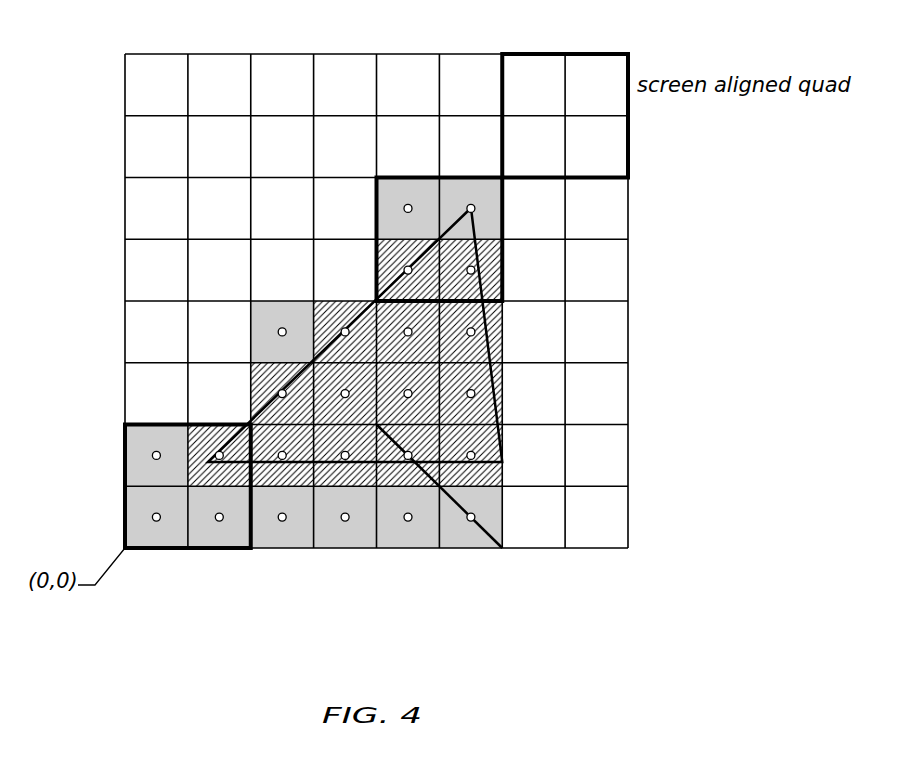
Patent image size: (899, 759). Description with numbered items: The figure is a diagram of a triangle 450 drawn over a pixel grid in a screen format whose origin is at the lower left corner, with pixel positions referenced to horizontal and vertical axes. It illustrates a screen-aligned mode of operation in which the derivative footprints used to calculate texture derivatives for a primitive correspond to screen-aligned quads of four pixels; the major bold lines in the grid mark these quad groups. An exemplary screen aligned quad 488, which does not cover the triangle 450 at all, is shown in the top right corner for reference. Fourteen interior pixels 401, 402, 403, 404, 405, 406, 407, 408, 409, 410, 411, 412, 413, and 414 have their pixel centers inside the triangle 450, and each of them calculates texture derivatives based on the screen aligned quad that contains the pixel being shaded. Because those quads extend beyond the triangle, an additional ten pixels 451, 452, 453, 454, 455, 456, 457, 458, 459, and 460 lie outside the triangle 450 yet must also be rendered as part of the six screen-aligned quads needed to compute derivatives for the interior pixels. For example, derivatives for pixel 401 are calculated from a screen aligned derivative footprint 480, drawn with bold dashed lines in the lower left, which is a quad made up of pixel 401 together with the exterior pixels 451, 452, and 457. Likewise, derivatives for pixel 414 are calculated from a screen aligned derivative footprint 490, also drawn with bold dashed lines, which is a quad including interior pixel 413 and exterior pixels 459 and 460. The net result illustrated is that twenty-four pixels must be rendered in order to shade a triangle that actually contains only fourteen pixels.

The interior pixel 401 is at (218, 459).
The interior pixel 402 is at (281, 459).
The interior pixel 403 is at (344, 459).
The interior pixel 404 is at (412, 455).
The interior pixel 405 is at (474, 457).
The interior pixel 406 is at (278, 393).
The interior pixel 407 is at (341, 395).
The interior pixel 408 is at (412, 393).
The interior pixel 409 is at (475, 394).
The interior pixel 410 is at (342, 329).
The interior pixel 411 is at (405, 329).
The interior pixel 412 is at (475, 331).
The interior pixel 413 is at (404, 270).
The interior pixel 414 is at (475, 270).
The triangle 450 is at (503, 462).
The exterior pixel 451 is at (152, 518).
The exterior pixel 452 is at (218, 521).
The exterior pixel 453 is at (281, 521).
The exterior pixel 454 is at (344, 521).
The exterior pixel 455 is at (408, 521).
The exterior pixel 456 is at (472, 521).
The exterior pixel 457 is at (152, 456).
The exterior pixel 458 is at (278, 331).
The exterior pixel 459 is at (408, 208).
The exterior pixel 460 is at (471, 208).
The screen aligned derivative footprint 480 is at (125, 488).
The screen aligned quad 488 is at (632, 63).
The screen aligned derivative footprint 490 is at (503, 285).